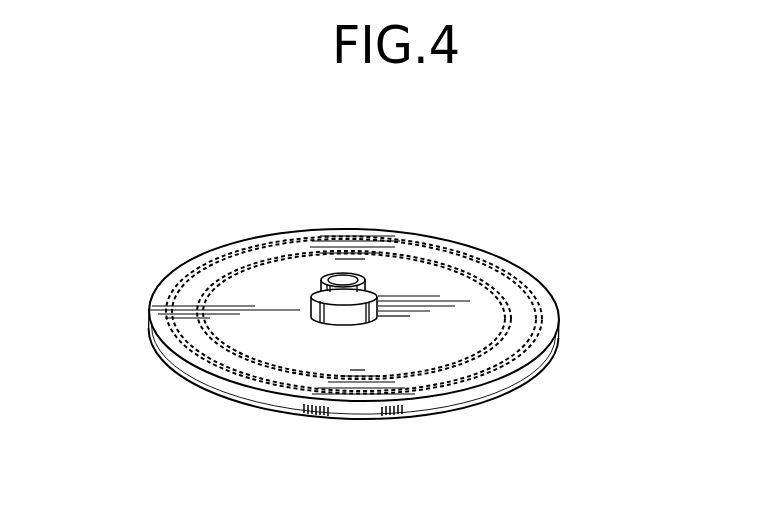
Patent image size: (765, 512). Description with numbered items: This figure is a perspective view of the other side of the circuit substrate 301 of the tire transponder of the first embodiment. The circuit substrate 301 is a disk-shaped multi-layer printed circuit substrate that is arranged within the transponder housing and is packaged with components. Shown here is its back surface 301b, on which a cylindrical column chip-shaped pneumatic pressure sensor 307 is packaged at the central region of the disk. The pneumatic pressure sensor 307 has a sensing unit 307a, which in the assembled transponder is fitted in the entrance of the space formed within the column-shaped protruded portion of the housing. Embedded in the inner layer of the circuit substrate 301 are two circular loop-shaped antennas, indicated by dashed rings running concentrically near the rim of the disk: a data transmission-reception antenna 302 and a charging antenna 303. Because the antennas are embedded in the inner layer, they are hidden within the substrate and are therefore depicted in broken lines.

The circuit substrate 301 is at (223, 393).
The back surface of the circuit substrate 301b is at (458, 292).
The data transmission-reception antenna 302 is at (258, 240).
The charging antenna 303 is at (437, 250).
The pneumatic pressure sensor 307 is at (311, 293).
The sensing unit 307a is at (346, 275).